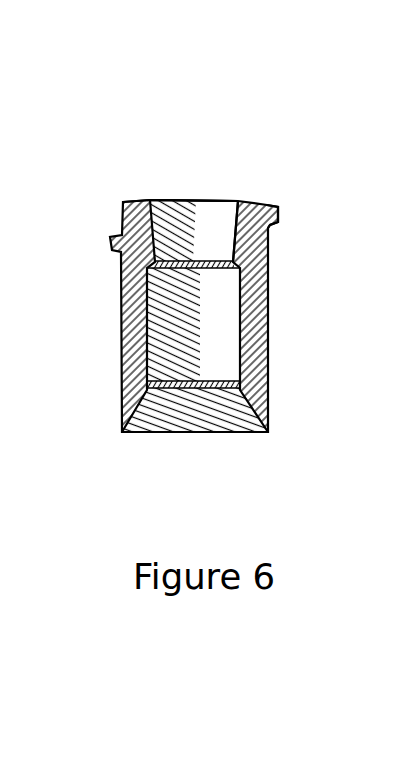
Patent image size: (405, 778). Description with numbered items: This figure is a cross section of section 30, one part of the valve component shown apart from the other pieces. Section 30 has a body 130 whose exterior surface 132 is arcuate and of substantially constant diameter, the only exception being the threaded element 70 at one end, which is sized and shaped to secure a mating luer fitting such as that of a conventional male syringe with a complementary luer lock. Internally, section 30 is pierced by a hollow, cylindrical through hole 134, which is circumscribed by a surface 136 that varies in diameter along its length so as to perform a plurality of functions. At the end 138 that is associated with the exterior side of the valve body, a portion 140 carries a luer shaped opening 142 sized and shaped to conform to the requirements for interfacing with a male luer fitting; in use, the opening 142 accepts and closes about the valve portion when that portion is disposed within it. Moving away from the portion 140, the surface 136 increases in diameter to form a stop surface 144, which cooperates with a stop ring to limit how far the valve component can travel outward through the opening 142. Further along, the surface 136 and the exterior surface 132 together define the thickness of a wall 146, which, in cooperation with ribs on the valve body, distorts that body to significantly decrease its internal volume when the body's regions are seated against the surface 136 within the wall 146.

The section 30 is at (296, 347).
The threaded element 70 is at (277, 217).
The body 130 is at (274, 201).
The exterior surface 132 is at (115, 330).
The through hole 134 is at (215, 172).
The surface 136 is at (266, 392).
The end 138 is at (128, 202).
The portion 140 is at (217, 238).
The luer shaped opening 142 is at (163, 160).
The stop surface 144 is at (262, 308).
The wall 146 is at (267, 370).